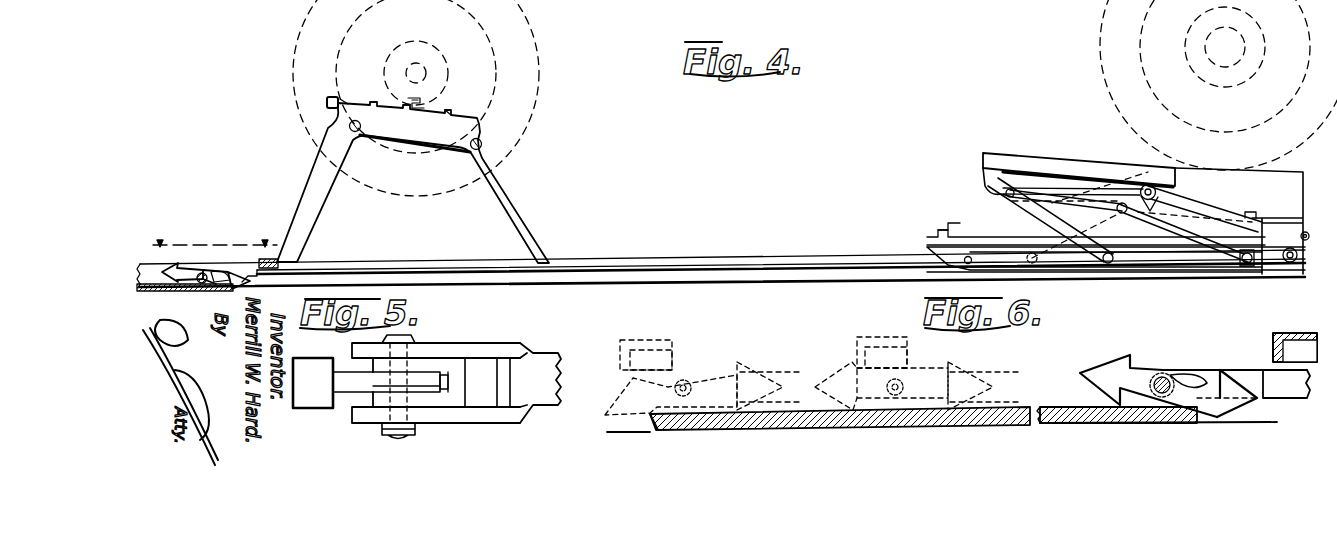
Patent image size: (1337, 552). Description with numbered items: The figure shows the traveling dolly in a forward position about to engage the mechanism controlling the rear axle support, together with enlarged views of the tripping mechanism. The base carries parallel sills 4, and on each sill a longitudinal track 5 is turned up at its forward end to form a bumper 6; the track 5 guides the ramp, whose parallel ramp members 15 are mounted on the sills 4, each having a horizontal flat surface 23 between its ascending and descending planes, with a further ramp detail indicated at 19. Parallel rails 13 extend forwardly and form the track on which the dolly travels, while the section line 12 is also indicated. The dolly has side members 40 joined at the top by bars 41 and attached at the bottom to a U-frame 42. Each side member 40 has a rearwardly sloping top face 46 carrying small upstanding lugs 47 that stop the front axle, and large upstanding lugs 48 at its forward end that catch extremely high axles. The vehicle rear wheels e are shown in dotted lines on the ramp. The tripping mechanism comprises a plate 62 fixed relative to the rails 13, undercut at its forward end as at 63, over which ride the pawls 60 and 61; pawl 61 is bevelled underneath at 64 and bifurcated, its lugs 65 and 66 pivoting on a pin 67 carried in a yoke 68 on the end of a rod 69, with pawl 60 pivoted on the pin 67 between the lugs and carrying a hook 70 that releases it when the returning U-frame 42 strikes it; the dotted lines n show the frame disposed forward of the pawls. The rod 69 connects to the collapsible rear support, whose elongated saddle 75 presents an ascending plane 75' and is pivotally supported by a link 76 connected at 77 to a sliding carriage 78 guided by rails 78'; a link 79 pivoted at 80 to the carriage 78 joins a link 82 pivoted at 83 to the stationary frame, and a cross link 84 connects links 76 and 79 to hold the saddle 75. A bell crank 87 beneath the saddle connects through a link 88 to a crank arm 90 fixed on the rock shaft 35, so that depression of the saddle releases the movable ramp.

In FIG. 4, the sills 4 is at (927, 250).
In FIG. 4, the track 5 is at (997, 238).
In FIG. 4, the bumper 6 is at (942, 230).
In FIG. 4, the section line 12 is at (318, 6).
In FIG. 4, the rails 13 is at (604, 256).
In FIG. 4, the ramp members 15 is at (1230, 177).
In FIG. 4, the notch 19 is at (1248, 206).
In FIG. 4, the horizontal flat surface 23 is at (1187, 161).
In FIG. 4, the rock shaft 35 is at (1288, 263).
In FIG. 4, the side members 40 is at (318, 165).
In FIG. 4, the bars 41 is at (349, 126).
In FIG. 4, the U-frame 42 is at (283, 261).
In FIG. 6, the U-frame 42 is at (647, 341).
In FIG. 4, the top face 46 is at (345, 101).
In FIG. 4, the small upstanding lugs 47 is at (448, 113).
In FIG. 4, the large upstanding lugs 48 is at (327, 99).
In FIG. 4, the pawl 60 is at (173, 262).
In FIG. 5, the pawl 60 is at (301, 366).
In FIG. 6, the pawl 60 is at (620, 380).
In FIG. 4, the pawl 61 is at (238, 278).
In FIG. 5, the pawl 61 is at (490, 365).
In FIG. 6, the pawl 61 is at (748, 372).
In FIG. 4, the plate 62 is at (150, 293).
In FIG. 6, the plate 62 is at (867, 428).
In FIG. 6, the undercut 63 is at (650, 425).
In FIG. 6, the bevel 64 is at (1205, 416).
In FIG. 5, the lug 65 is at (413, 362).
In FIG. 5, the lug 66 is at (417, 402).
In FIG. 4, the pin 67 is at (202, 273).
In FIG. 5, the pin 67 is at (396, 440).
In FIG. 6, the pin 67 is at (1161, 376).
In FIG. 5, the yoke 68 is at (500, 417).
In FIG. 4, the rod 69 is at (690, 264).
In FIG. 5, the rod 69 is at (550, 358).
In FIG. 6, the rod 69 is at (1293, 400).
In FIG. 4, the hook 70 is at (218, 273).
In FIG. 5, the hook 70 is at (433, 375).
In FIG. 6, the hook 70 is at (717, 382).
In FIG. 4, the saddle 75 is at (1079, 162).
In FIG. 4, the ascending plane 75' is at (1088, 161).
In FIG. 4, the link 76 is at (1107, 262).
In FIG. 4, the pivot connection 77 is at (1117, 265).
In FIG. 4, the sliding carriage 78 is at (1094, 282).
In FIG. 4, the rails 78' is at (1094, 287).
In FIG. 4, the link 79 is at (1215, 238).
In FIG. 4, the pivot connection 80 is at (1245, 264).
In FIG. 4, the link 82 is at (1092, 213).
In FIG. 4, the pivot connection 83 is at (1032, 264).
In FIG. 4, the cross link 84 is at (1093, 192).
In FIG. 4, the bell crank 87 is at (1157, 193).
In FIG. 4, the link 88 is at (1193, 220).
In FIG. 4, the crank arm 90 is at (1303, 232).
In FIG. 4, the rear wheels e is at (1098, 42).
In FIG. 6, the dotted-line position n is at (628, 330).